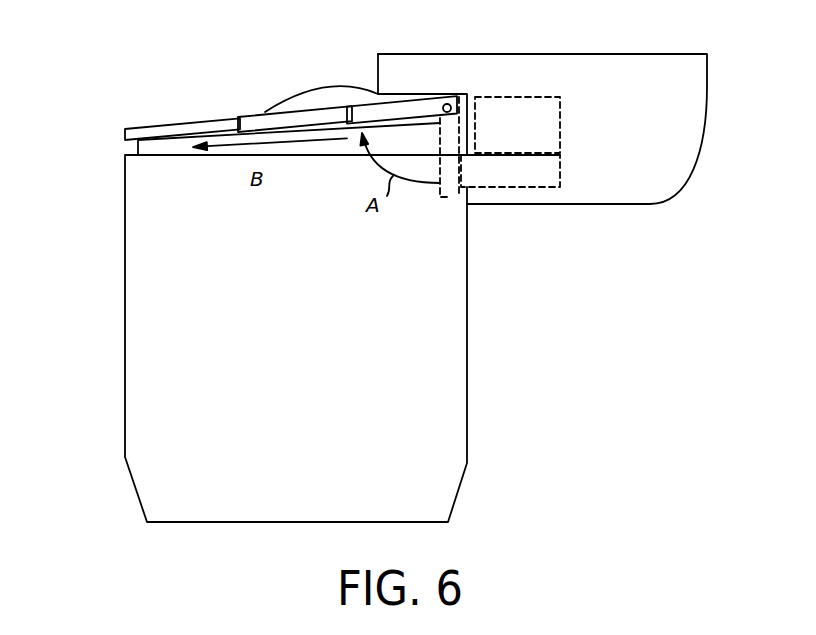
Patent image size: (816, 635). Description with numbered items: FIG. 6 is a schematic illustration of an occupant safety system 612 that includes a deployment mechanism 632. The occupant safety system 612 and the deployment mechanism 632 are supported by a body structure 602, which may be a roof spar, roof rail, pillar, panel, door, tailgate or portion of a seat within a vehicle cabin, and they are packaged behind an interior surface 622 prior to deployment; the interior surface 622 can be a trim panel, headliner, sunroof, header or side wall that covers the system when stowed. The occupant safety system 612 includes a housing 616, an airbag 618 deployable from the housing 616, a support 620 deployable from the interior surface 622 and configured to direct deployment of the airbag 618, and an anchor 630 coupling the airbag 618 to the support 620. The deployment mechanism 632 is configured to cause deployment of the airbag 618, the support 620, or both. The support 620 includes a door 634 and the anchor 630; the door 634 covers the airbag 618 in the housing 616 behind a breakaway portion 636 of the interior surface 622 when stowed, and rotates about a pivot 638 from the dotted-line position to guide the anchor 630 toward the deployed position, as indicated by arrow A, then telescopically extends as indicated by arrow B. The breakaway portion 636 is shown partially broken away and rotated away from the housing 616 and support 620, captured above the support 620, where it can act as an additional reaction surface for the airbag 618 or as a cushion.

The body structure 602 is at (683, 53).
The occupant safety system 612 is at (78, 55).
The housing 616 is at (561, 176).
The airbag 618 is at (124, 350).
The support 620 is at (215, 119).
The interior surface 622 is at (508, 206).
The anchor 630 is at (137, 150).
The deployment mechanism 632 is at (561, 120).
The door 634 is at (446, 198).
The breakaway portion 636 is at (325, 85).
The pivot 638 is at (450, 103).